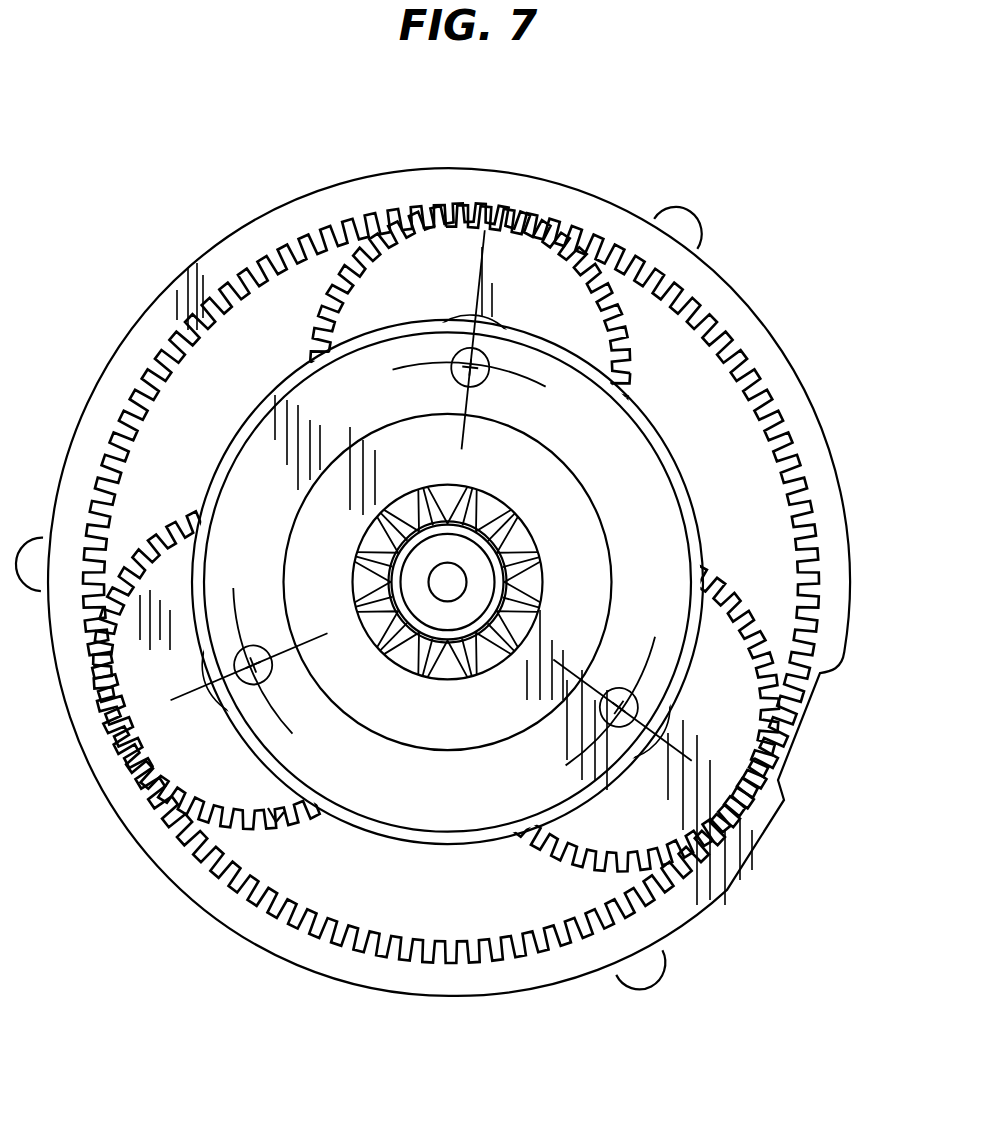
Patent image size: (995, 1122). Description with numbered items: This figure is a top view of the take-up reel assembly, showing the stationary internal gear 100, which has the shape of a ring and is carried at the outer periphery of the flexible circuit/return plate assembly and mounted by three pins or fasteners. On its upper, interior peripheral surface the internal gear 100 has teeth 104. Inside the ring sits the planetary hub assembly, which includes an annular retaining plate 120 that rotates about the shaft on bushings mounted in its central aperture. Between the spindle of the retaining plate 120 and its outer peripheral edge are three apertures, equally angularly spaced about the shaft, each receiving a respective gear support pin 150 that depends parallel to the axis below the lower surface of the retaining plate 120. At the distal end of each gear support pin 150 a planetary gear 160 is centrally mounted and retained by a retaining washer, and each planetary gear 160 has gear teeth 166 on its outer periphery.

The internal gear 100 is at (781, 376).
The teeth 104 is at (372, 940).
The retaining plate 120 is at (240, 483).
The gear support pin 150 is at (488, 360).
The planetary gear 160 is at (456, 291).
The gear teeth 166 is at (277, 822).